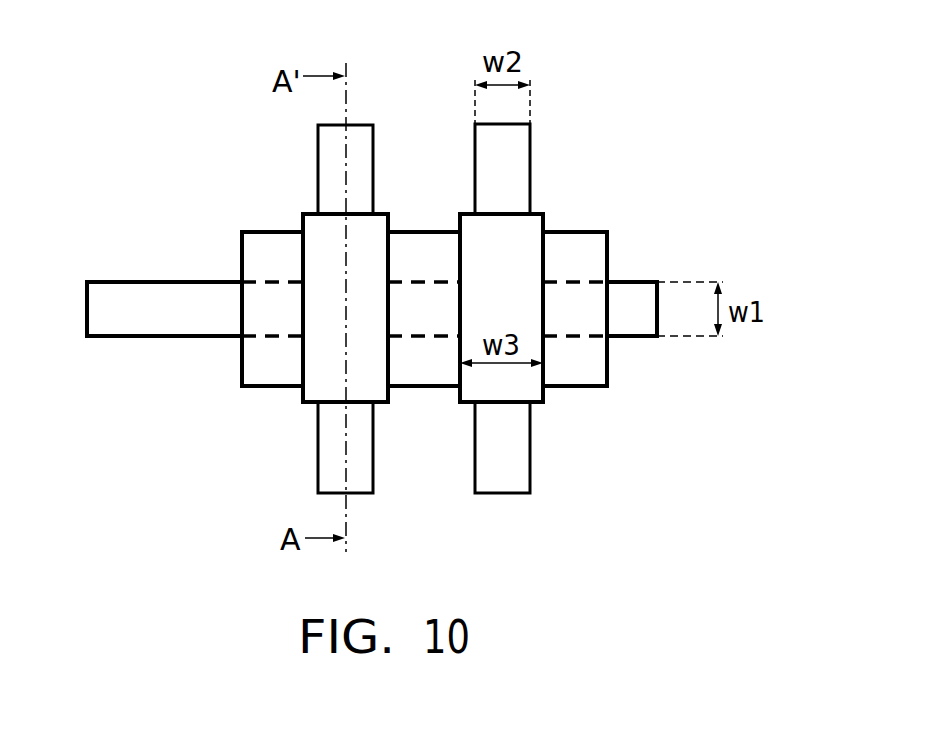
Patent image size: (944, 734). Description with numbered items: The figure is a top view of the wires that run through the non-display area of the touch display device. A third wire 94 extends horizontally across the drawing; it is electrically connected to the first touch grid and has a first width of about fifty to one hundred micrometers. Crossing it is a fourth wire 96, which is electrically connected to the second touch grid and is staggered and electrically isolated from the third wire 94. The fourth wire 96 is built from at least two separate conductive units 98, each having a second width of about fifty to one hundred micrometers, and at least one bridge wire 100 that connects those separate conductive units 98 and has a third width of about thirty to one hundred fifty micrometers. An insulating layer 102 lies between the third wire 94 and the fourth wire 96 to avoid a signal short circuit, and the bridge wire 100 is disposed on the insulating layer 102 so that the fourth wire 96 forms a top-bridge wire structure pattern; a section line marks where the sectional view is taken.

The third wire 94 is at (638, 295).
The fourth wire 96 is at (760, 9).
The separate conductive units 98 is at (327, 141).
The bridge wire 100 is at (320, 228).
The insulating layer 102 is at (575, 245).